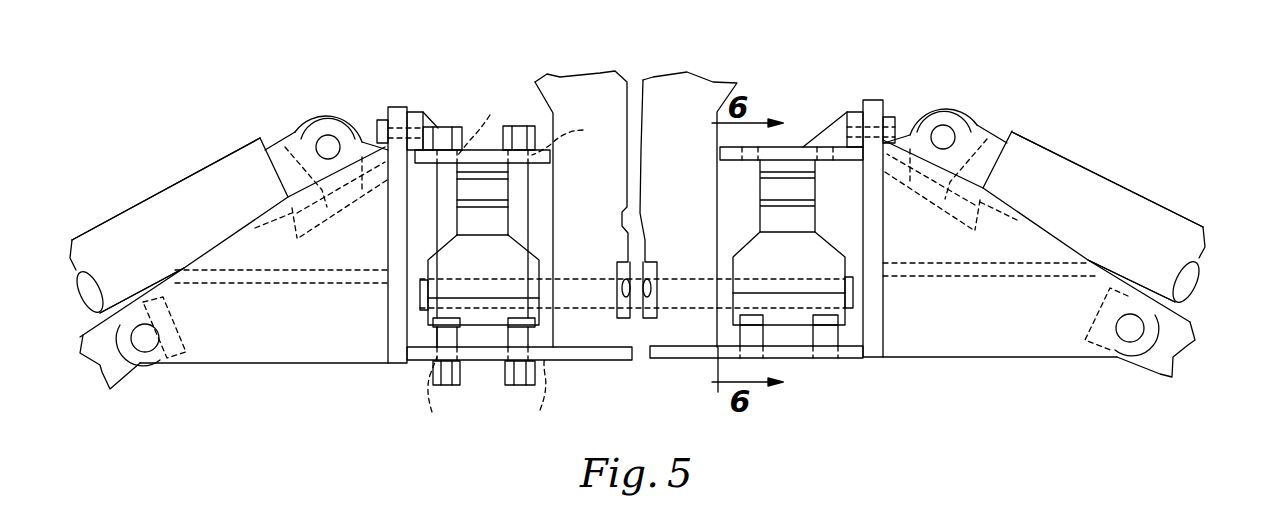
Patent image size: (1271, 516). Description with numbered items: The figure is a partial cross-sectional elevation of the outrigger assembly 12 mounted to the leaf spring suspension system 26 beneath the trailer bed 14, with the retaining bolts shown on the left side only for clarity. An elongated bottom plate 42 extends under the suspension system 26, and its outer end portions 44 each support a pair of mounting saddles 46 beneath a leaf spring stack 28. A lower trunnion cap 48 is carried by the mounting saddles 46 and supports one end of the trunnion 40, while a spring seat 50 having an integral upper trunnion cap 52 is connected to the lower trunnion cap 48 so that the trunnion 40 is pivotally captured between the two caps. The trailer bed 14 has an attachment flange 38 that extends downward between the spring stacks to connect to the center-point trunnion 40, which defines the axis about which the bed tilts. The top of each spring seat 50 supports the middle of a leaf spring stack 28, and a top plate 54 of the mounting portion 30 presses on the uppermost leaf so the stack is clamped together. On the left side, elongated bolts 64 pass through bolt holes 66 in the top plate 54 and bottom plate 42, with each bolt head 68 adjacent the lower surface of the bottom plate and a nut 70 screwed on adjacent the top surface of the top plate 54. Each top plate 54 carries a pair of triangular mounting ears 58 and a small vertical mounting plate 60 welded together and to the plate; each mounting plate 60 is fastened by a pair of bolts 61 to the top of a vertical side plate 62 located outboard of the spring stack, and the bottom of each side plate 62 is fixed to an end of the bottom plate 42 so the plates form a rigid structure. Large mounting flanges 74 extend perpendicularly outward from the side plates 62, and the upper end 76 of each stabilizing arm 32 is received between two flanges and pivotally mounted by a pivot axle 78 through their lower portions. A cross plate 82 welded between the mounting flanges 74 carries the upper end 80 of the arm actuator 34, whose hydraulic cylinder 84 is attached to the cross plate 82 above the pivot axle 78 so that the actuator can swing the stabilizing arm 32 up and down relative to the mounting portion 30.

The outrigger assembly 12 is at (293, 388).
The trailer bed 14 is at (575, 98).
The suspension system 26 is at (826, 205).
The leaf springs 28 is at (498, 192).
The mounting portion 30 is at (407, 369).
The stabilizing arm 32 is at (115, 374).
The arm actuator 34 is at (106, 248).
The attachment flange 38 is at (547, 113).
The trunnion 40 is at (623, 337).
The bottom plate 42 is at (607, 360).
The outer end portions 44 is at (422, 358).
The mounting saddles 46 is at (532, 337).
The lower trunnion cap 48 is at (492, 318).
The spring seat 50 is at (497, 248).
The upper trunnion cap 52 is at (493, 288).
The top plate 54 is at (550, 158).
The mounting ears 58 is at (426, 112).
The mounting plate 60 is at (415, 122).
The bolts 61 is at (378, 122).
The side plate 62 is at (390, 247).
The bolts 64 is at (443, 222).
The bolt holes 66 is at (517, 262).
The bolt head 68 is at (453, 393).
The nut 70 is at (457, 125).
The mounting flanges 74 is at (248, 348).
The upper end 76 is at (127, 367).
The pivot axle 78 is at (152, 347).
The upper end 80 is at (233, 175).
The cross plate 82 is at (283, 150).
The hydraulic cylinder 84 is at (162, 212).